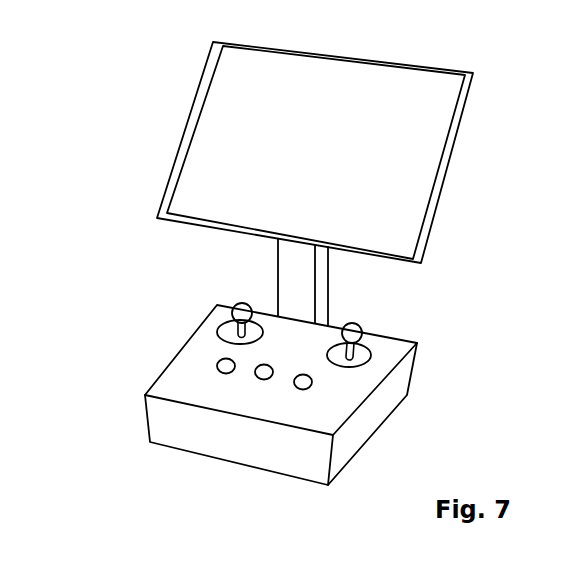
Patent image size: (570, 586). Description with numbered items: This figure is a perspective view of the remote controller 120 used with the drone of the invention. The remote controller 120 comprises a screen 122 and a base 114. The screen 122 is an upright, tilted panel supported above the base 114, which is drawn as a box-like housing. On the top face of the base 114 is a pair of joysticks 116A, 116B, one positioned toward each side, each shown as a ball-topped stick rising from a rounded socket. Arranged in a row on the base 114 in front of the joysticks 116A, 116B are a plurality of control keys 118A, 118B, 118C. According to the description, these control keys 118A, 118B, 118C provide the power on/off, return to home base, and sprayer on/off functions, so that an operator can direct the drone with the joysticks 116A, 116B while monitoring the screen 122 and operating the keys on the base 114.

The remote controller 120 is at (152, 110).
The screen 122 is at (460, 133).
The base 114 is at (418, 362).
The joystick 116A is at (233, 304).
The joystick 116B is at (362, 329).
The control key 118A is at (226, 374).
The control key 118B is at (264, 380).
The control key 118C is at (303, 390).